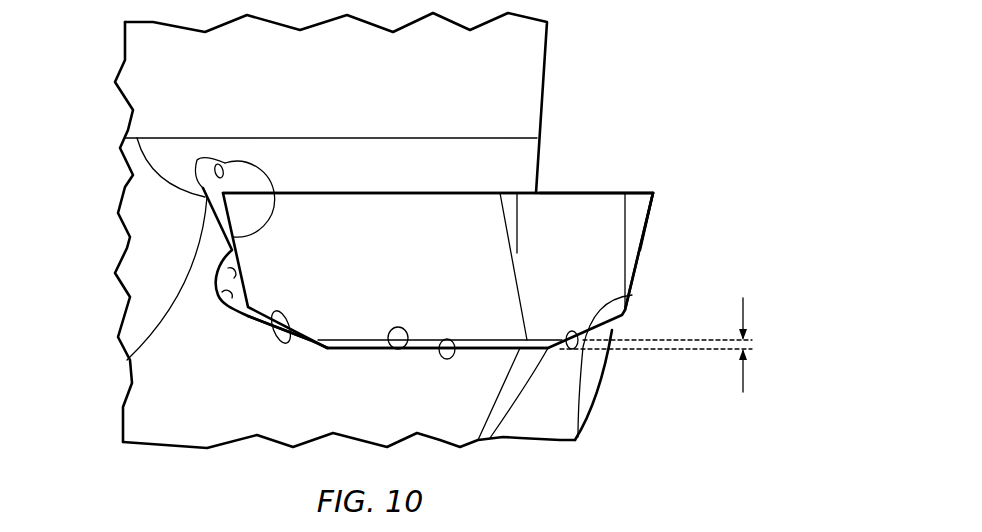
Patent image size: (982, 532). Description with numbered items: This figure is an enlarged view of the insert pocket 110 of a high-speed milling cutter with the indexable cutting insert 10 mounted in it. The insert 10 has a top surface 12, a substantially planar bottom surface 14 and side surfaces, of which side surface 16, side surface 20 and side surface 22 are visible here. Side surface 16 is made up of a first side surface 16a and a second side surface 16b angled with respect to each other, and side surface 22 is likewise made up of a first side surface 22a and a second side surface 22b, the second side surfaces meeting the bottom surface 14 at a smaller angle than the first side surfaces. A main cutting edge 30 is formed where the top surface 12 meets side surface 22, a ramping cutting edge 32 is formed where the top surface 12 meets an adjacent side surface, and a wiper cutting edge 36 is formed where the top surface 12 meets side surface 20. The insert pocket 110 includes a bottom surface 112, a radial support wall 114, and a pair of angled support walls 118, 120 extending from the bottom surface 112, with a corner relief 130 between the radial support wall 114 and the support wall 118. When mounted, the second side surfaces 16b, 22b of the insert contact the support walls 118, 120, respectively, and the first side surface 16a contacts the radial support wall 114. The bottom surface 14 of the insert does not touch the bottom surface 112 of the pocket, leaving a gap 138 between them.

The indexable cutting insert 10 is at (678, 198).
The top surface 12 is at (483, 192).
The bottom surface 14 is at (455, 347).
The side surface 16 is at (228, 250).
The first side surface 16a is at (245, 275).
The second side surface 16b is at (300, 345).
The side surface 20 is at (592, 222).
The side surface 22 is at (661, 232).
The first side surface 22a is at (642, 253).
The second side surface 22b is at (567, 342).
The main cutting edge 30 is at (642, 192).
The ramping cutting edge 32 is at (362, 192).
The wiper cutting edge 36 is at (570, 192).
The insert pocket 110 is at (207, 261).
The bottom surface 112 is at (387, 348).
The radial support wall 114 is at (272, 192).
The support wall 118 is at (262, 325).
The support wall 120 is at (632, 295).
The corner relief 130 is at (230, 310).
The gap 138 is at (742, 378).